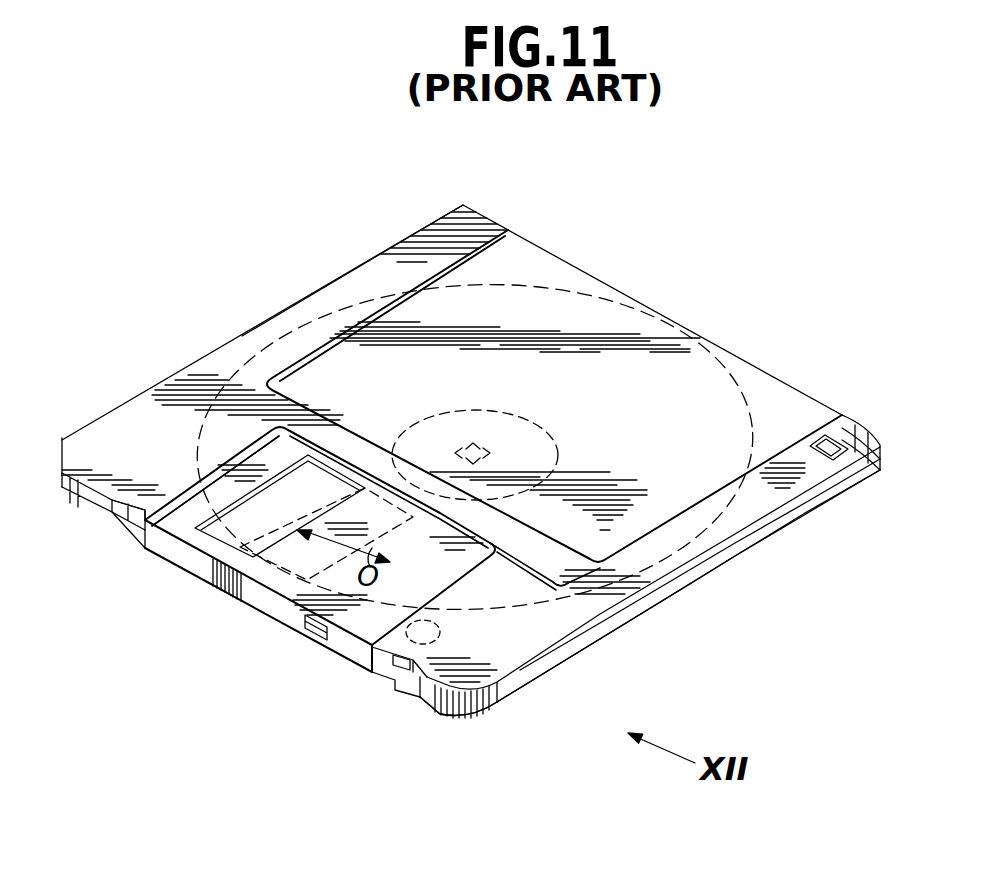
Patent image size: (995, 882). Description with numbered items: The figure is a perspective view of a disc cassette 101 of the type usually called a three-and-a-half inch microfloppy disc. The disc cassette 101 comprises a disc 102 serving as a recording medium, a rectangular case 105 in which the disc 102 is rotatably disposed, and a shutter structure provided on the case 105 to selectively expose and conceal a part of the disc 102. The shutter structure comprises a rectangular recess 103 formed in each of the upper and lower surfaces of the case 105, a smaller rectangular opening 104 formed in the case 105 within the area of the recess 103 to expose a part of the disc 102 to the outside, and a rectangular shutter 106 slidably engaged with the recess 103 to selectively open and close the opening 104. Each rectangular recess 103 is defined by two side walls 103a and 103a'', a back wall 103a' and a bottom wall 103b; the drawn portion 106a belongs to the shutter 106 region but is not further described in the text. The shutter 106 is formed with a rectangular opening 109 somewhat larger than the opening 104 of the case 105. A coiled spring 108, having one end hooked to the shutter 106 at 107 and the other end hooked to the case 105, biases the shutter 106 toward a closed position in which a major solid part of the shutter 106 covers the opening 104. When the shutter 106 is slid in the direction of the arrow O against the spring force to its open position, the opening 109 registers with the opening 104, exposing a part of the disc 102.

The disc cassette 101 is at (695, 305).
The disc 102 is at (583, 300).
The rectangular recess 103 is at (502, 590).
The bottom wall 103b is at (458, 706).
The side wall 103a is at (175, 428).
The back wall 103a' is at (612, 621).
The side wall 103a'' is at (509, 681).
The rectangular opening 104 is at (309, 551).
The case 105 is at (247, 326).
The shutter 106 is at (168, 558).
The shutter end plate 106a is at (145, 507).
The hook point 107 is at (305, 636).
The coiled spring 108 is at (355, 628).
The rectangular opening 109 is at (220, 538).